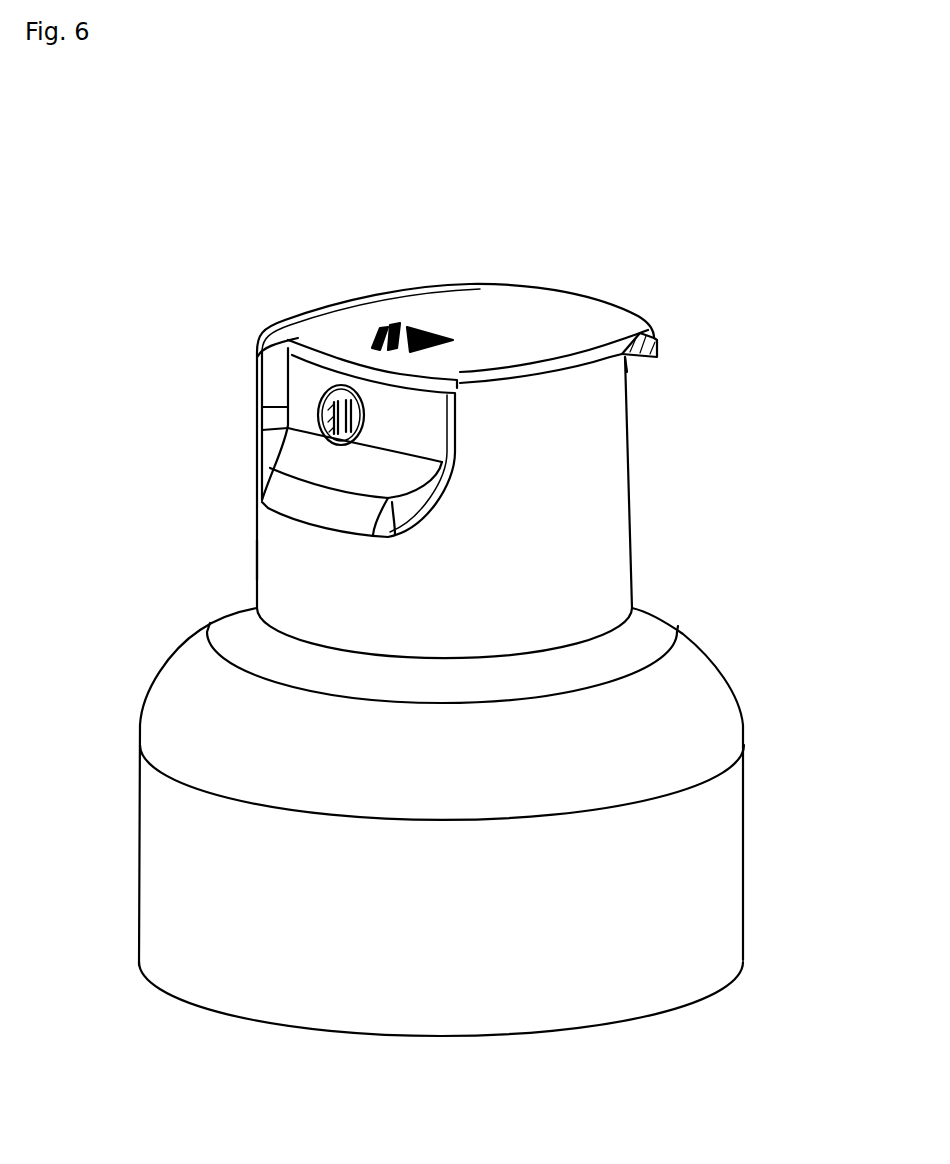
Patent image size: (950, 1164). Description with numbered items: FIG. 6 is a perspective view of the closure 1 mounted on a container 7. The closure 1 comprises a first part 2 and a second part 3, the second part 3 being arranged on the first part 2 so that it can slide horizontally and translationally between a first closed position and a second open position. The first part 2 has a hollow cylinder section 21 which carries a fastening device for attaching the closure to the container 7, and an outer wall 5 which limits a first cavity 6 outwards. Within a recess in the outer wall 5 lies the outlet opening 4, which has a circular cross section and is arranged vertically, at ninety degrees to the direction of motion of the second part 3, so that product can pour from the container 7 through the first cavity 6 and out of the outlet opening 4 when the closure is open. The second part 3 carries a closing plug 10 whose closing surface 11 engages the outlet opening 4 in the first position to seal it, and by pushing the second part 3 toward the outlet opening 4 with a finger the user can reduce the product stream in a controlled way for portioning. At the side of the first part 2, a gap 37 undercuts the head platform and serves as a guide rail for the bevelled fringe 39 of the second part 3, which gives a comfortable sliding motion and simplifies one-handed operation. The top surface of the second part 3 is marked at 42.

The closure 1 is at (155, 177).
The first part 2 is at (632, 473).
The second part 3 is at (560, 287).
The outlet opening 4 is at (318, 400).
The outer wall 5 is at (392, 428).
The first cavity 6 is at (337, 398).
The container 7 is at (723, 663).
The closing plug 10 is at (348, 400).
The closing surface 11 is at (392, 318).
The hollow cylinder section 21 is at (255, 558).
The gap 37 is at (633, 363).
The bevelled fringe 39 is at (657, 333).
The top surface 42 is at (480, 317).